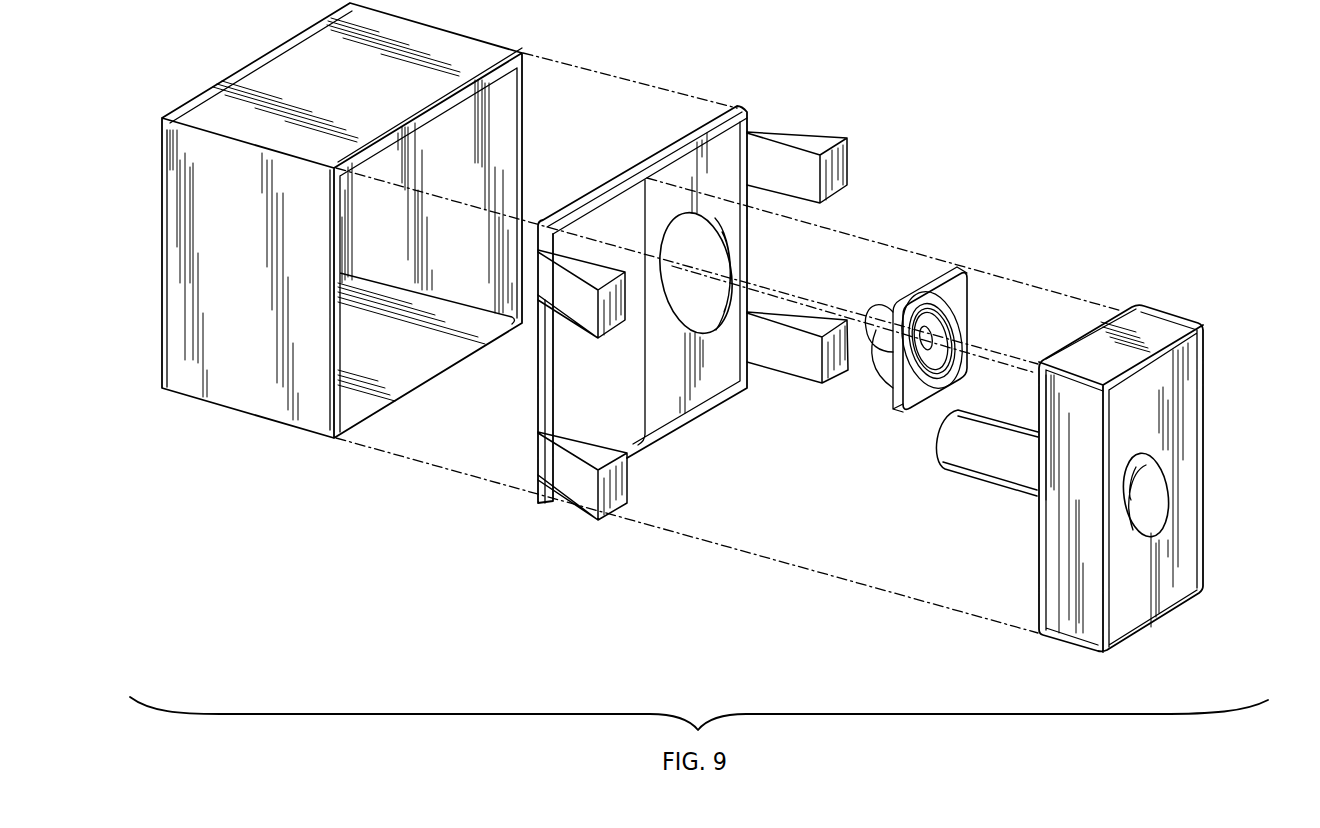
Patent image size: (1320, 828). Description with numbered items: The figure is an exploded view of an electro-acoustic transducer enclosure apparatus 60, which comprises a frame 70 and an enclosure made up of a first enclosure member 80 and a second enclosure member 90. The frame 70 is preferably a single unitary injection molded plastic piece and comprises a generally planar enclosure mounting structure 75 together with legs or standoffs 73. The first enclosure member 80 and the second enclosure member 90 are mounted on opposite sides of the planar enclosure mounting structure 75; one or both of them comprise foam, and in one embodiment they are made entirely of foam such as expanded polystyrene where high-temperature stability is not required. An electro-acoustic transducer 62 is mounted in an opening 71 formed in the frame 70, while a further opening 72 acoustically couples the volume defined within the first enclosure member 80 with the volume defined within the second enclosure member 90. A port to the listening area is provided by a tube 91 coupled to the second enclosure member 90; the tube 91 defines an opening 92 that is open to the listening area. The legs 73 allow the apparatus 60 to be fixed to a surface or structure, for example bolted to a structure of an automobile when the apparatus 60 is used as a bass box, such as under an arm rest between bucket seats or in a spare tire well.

The electro-acoustic transducer enclosure apparatus 60 is at (663, 302).
The electro-acoustic transducer 62 is at (970, 300).
The frame 70 is at (663, 286).
The opening 71 is at (714, 252).
The opening 72 is at (567, 398).
The legs or standoffs 73 is at (623, 490).
The enclosure mounting structure 75 is at (652, 156).
The first enclosure member 80 is at (530, 107).
The second enclosure member 90 is at (1120, 478).
The tube 91 is at (978, 460).
The opening 92 is at (1148, 514).